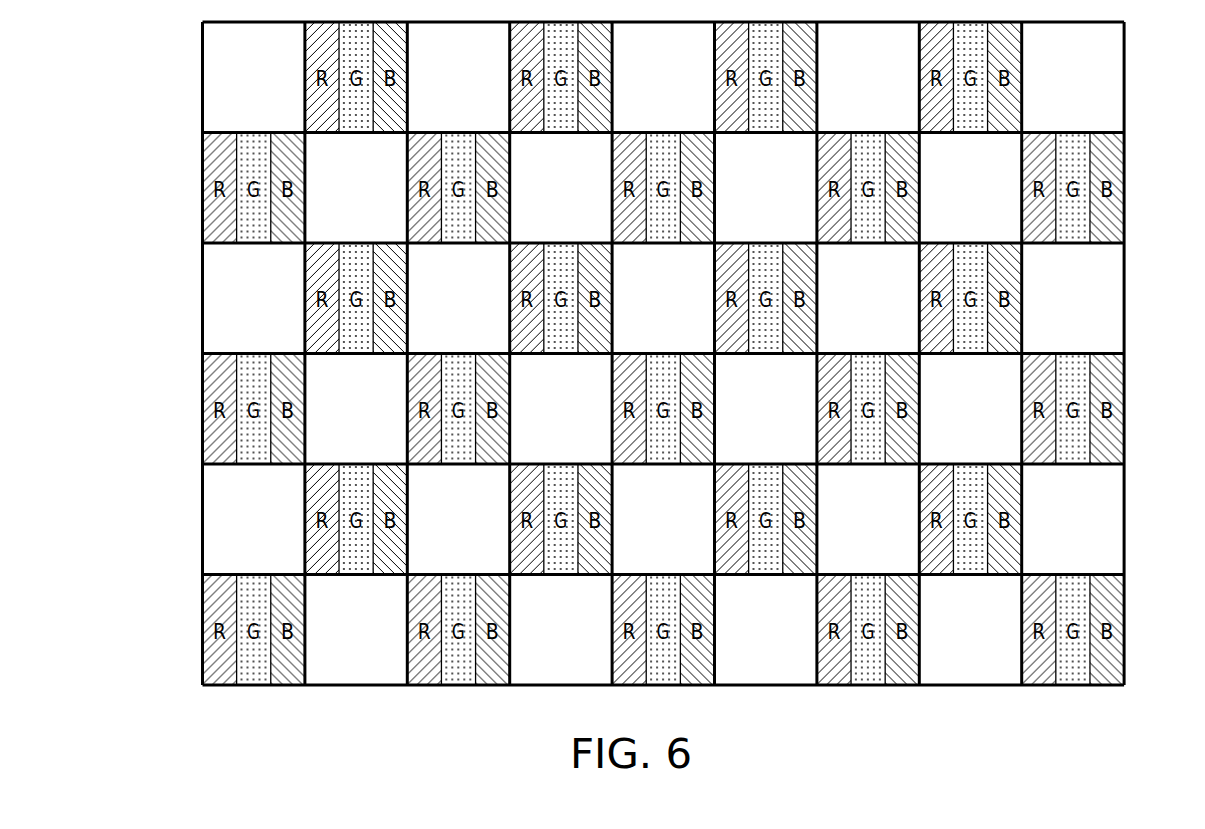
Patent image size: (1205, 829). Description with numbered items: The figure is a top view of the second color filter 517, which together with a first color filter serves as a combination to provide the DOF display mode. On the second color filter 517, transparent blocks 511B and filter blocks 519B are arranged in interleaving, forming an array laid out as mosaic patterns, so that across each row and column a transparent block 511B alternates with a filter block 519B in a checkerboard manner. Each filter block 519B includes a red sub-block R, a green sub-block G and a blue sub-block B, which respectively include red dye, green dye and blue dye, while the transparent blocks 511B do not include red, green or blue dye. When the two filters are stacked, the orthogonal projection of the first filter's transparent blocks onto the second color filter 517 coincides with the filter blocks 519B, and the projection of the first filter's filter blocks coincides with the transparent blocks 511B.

The transparent block 511B is at (202, 298).
The filter block 519B is at (202, 408).
The second color filter 517 is at (1203, 733).